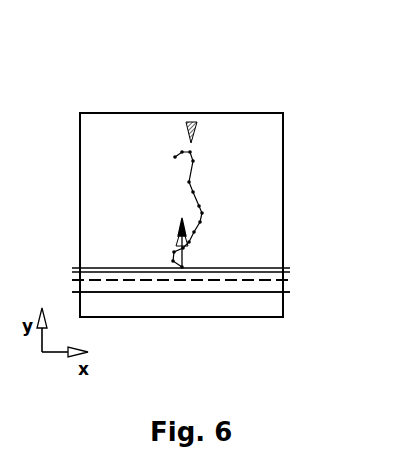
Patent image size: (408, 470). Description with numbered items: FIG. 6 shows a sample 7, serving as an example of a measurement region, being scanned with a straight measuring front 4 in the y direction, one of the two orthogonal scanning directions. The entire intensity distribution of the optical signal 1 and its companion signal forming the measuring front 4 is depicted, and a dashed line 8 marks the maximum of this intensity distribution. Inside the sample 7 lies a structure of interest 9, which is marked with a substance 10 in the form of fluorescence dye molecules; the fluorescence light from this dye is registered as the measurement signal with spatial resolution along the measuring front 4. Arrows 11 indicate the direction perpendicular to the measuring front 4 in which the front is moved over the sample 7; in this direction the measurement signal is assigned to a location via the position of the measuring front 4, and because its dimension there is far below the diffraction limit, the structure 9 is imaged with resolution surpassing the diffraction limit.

The optical signal 1 is at (313, 288).
The measuring front 4 is at (313, 266).
The sample 7 is at (292, 96).
The dashed line 8 is at (252, 282).
The structure of interest 9 is at (194, 120).
The substance 10 is at (191, 153).
The arrows 11 is at (187, 250).